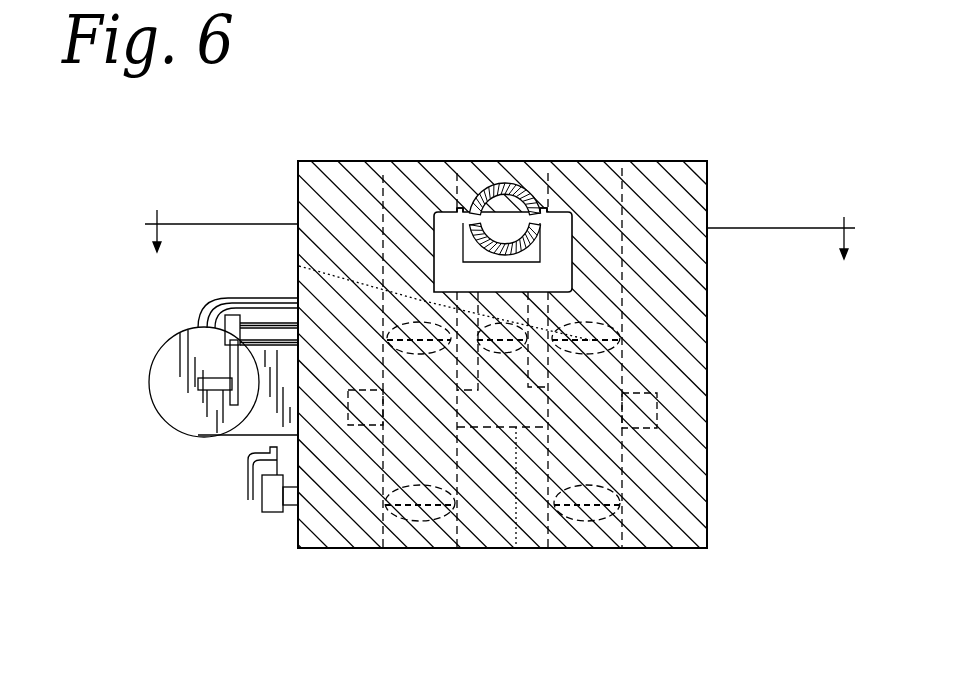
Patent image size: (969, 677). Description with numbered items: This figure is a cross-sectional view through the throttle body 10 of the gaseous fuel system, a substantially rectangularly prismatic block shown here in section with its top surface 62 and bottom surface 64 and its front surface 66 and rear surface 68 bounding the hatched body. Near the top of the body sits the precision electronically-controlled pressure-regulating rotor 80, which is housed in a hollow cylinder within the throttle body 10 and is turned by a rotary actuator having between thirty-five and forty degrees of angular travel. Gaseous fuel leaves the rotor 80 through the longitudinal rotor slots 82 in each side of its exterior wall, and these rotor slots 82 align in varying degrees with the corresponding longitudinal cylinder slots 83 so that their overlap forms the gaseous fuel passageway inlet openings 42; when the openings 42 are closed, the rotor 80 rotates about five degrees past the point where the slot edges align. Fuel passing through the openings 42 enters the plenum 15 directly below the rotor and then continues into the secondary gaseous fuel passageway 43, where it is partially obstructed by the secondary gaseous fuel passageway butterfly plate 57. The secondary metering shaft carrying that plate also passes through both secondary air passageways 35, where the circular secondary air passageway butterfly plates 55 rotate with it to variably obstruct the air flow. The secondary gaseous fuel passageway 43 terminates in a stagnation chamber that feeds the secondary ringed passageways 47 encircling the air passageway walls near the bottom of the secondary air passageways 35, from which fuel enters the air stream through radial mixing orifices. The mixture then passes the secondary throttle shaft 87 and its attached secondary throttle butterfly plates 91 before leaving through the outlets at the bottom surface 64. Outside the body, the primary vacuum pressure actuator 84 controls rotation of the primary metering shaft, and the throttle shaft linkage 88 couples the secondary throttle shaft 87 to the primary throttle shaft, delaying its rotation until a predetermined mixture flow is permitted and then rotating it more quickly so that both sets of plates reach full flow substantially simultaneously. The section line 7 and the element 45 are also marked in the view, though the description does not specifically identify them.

The throttle body 10 is at (707, 517).
The top surface 62 is at (672, 161).
The bottom surface 64 is at (692, 550).
The front surface 66 is at (299, 174).
The rear surface 68 is at (707, 190).
The plenum 15 is at (451, 258).
The gaseous fuel passageway inlet openings 42 is at (460, 208).
The pressure-regulating rotor 80 is at (518, 163).
The rotor slots 82 is at (479, 190).
The cylinder slots 83 is at (470, 204).
The secondary gaseous fuel passageway butterfly plate 57 is at (299, 266).
The secondary air passageway butterfly plates 55 is at (620, 340).
The secondary gaseous fuel passageway 43 is at (548, 385).
The secondary ringed passageways 47 is at (657, 412).
The secondary air passageways 35 is at (630, 453).
The secondary throttle butterfly plates 91 is at (412, 520).
The passage 45 is at (516, 548).
The primary vacuum pressure actuator 84 is at (163, 413).
The throttle shaft linkage 88 is at (250, 453).
The secondary throttle shaft 87 is at (296, 506).
The section line 7- 7 is at (500, 253).